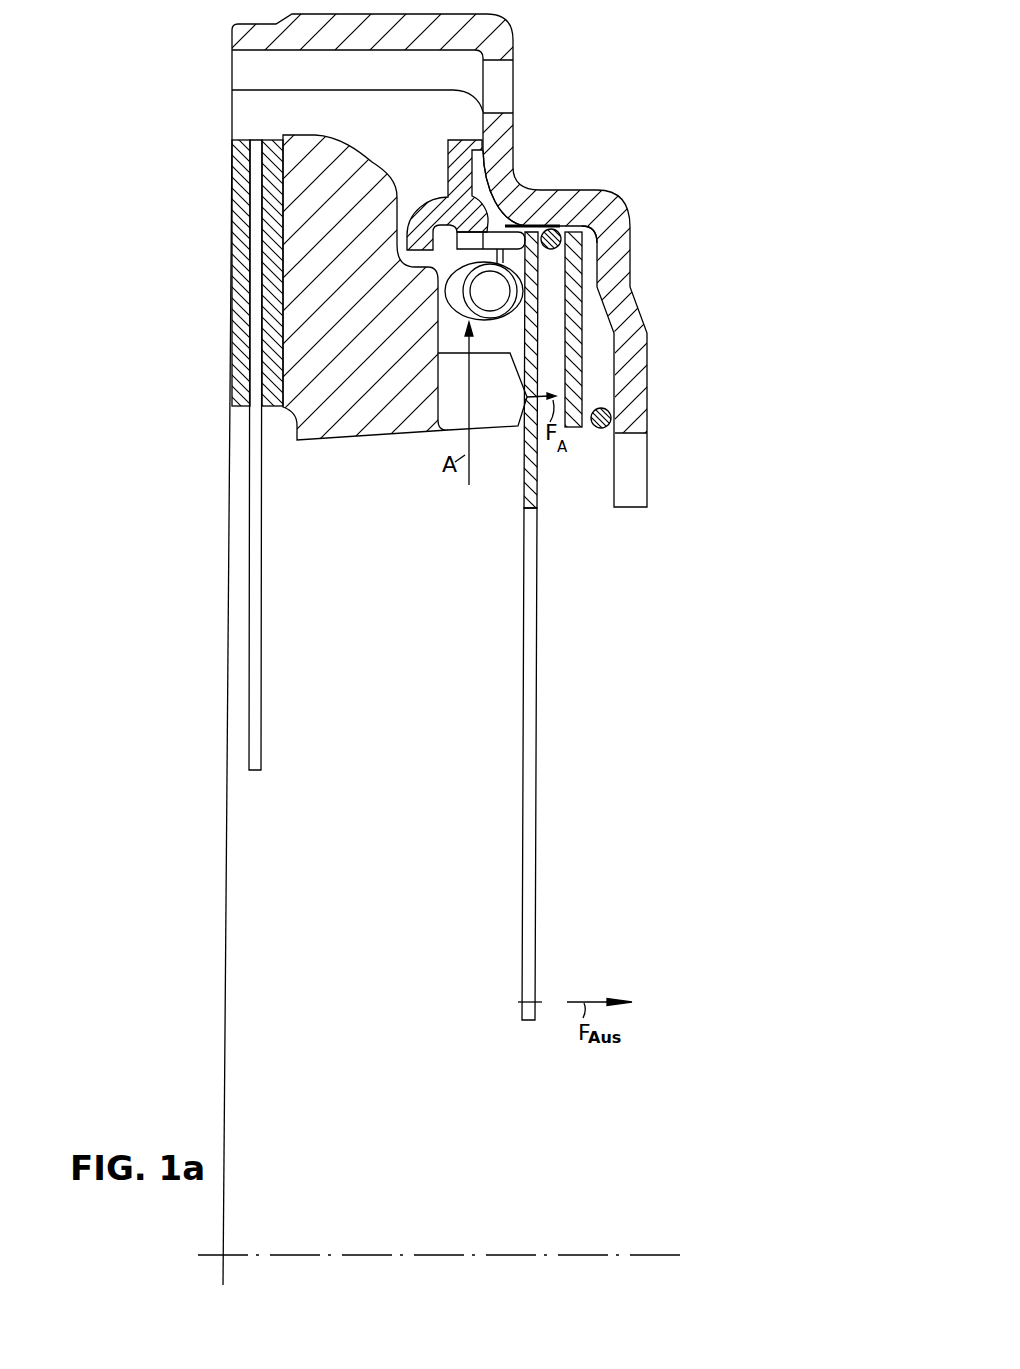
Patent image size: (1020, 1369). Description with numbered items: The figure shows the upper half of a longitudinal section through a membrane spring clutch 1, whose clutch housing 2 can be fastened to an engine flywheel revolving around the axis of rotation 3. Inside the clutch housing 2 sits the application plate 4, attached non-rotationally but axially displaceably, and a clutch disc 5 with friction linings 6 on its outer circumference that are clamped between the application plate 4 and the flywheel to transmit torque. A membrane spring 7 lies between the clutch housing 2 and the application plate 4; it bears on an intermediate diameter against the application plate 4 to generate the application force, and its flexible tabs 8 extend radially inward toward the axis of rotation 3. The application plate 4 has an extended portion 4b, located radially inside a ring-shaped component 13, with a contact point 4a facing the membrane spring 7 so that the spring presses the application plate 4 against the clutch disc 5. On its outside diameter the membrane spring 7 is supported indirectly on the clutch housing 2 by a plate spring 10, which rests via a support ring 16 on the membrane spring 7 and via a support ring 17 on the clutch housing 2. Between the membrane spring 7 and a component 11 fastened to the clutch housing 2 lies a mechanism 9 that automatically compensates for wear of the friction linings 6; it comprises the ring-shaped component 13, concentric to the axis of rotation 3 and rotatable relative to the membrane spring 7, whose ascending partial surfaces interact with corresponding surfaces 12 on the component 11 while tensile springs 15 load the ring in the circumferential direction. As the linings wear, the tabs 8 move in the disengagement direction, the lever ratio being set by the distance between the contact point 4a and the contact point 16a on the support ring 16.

The membrane spring clutch 1 is at (727, 99).
The clutch housing 2 is at (630, 272).
The axis of rotation 3 is at (450, 1255).
The application plate 4 is at (290, 262).
The contact point 4a is at (515, 390).
The extended portion 4b is at (545, 380).
The clutch disc 5 is at (252, 458).
The friction linings 6 is at (240, 334).
The membrane spring 7 is at (525, 478).
The flexible tabs 8 is at (524, 860).
The mechanism 9 is at (540, 210).
The plate spring 10 is at (592, 350).
The component 11 is at (465, 163).
The corresponding surfaces 12 is at (497, 210).
The ring-shaped component 13 is at (548, 224).
The tensile springs 15 is at (616, 280).
The support ring 16 is at (560, 230).
The contact point 16a is at (628, 250).
The support ring 17 is at (601, 430).